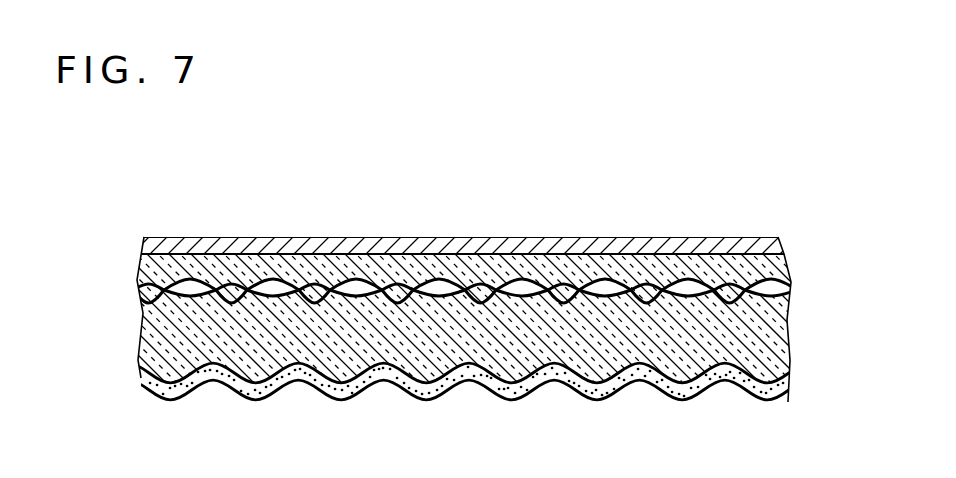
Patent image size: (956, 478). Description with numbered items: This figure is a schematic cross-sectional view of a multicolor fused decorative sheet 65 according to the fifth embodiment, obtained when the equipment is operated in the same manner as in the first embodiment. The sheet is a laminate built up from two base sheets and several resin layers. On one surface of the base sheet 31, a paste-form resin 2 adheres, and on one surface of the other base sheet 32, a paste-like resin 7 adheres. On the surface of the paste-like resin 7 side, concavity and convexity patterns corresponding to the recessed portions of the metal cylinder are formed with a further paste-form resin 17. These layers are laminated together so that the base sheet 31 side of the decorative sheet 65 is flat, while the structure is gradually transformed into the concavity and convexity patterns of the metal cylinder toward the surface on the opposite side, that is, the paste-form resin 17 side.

The multicolor fused decorative sheet 65 is at (125, 254).
The base sheet 31 is at (752, 245).
The paste-form resin 2 is at (780, 270).
The base sheet 32 is at (782, 295).
The paste-like resin 7 is at (780, 337).
The paste-form resin 17 is at (695, 400).